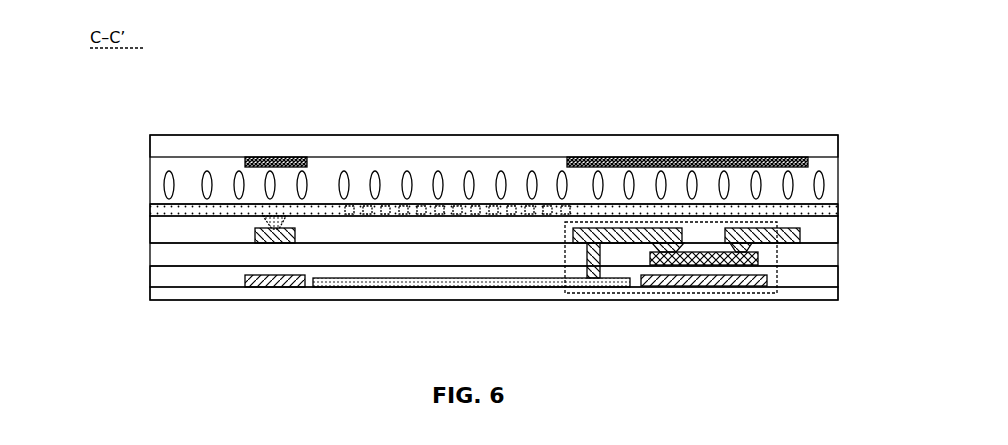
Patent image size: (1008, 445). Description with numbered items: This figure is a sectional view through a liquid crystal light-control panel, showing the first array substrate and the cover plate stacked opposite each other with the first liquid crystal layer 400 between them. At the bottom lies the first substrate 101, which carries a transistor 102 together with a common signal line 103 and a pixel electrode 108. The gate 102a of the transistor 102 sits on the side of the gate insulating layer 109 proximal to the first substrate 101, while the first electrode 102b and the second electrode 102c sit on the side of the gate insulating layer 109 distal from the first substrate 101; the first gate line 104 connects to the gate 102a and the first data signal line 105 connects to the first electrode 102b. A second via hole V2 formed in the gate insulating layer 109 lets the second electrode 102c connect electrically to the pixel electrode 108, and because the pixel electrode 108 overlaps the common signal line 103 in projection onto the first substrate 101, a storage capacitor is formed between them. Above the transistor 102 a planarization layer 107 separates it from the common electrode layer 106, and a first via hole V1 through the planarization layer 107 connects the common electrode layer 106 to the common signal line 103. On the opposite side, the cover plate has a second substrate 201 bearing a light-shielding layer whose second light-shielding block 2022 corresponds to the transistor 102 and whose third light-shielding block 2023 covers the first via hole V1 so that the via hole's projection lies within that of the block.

The first substrate 101 is at (150, 294).
The transistor 102 is at (564, 296).
The gate 102a is at (742, 286).
The first electrode 102b is at (806, 167).
The second electrode 102c is at (637, 229).
The common signal line 103 is at (254, 234).
The first gate line 104 is at (670, 286).
The first data signal line 105 is at (795, 236).
The common electrode layer 106 is at (150, 208).
The planarization layer 107 is at (150, 227).
The pixel electrode 108 is at (428, 288).
The gate insulating layer 109 is at (831, 278).
The second substrate 201 is at (150, 147).
The second light-shielding block 2022 is at (780, 157).
The third light-shielding block 2023 is at (290, 157).
The first liquid crystal layer 400 is at (823, 186).
The first via hole V1 is at (288, 222).
The second via hole V2 is at (586, 264).